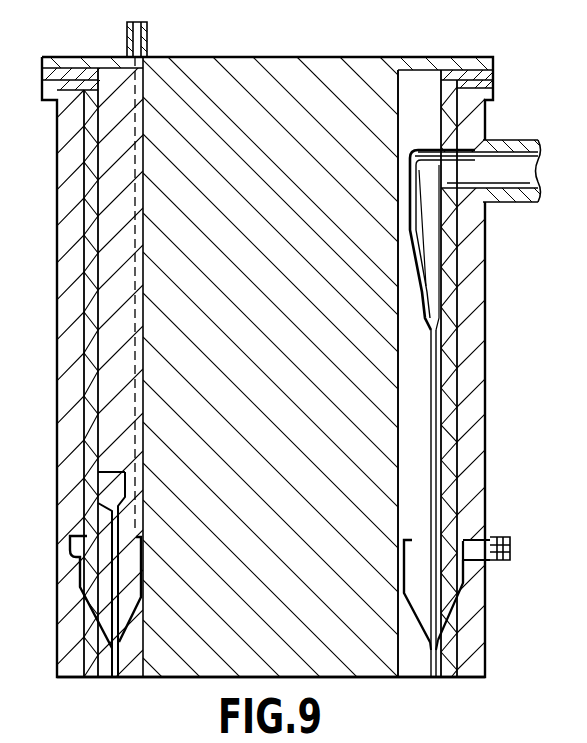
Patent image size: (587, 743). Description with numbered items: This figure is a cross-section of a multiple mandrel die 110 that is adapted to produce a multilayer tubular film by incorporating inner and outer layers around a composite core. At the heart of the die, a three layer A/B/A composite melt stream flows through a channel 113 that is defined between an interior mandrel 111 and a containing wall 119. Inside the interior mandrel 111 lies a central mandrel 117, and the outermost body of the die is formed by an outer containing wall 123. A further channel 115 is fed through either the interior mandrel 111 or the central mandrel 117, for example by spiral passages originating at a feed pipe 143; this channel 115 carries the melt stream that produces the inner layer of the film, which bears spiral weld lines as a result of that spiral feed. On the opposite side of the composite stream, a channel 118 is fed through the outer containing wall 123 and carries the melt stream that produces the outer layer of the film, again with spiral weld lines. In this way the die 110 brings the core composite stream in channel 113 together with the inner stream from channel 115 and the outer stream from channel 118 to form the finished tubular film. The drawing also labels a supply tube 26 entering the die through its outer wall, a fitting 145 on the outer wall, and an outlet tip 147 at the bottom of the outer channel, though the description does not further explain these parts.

The multiple mandrel die 110 is at (314, 53).
The feed pipe 143 is at (147, 33).
The supply tube 26 is at (488, 137).
The channel 113 is at (433, 343).
The interior mandrel 111 is at (418, 382).
The containing wall 119 is at (446, 418).
The outer containing wall 123 is at (470, 452).
The channel 115 is at (406, 541).
The fitting 145 is at (509, 568).
The channel 118 is at (464, 580).
The outlet tip 147 is at (433, 650).
The central mandrel 117 is at (376, 670).